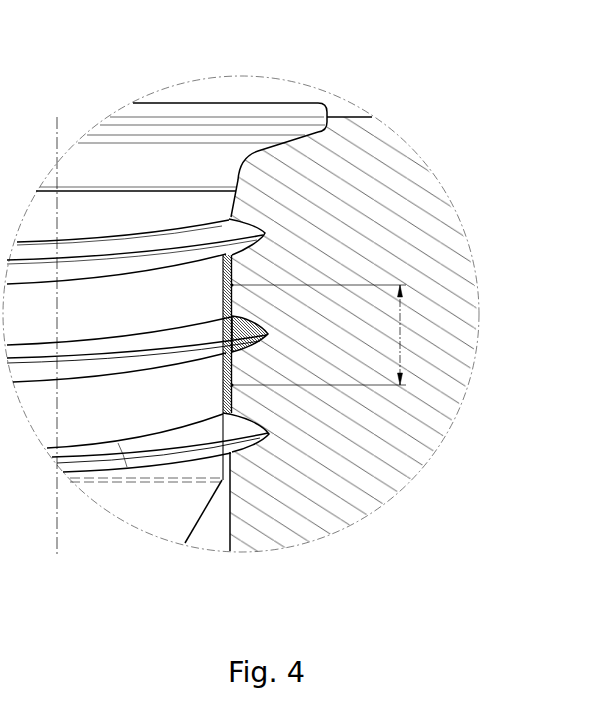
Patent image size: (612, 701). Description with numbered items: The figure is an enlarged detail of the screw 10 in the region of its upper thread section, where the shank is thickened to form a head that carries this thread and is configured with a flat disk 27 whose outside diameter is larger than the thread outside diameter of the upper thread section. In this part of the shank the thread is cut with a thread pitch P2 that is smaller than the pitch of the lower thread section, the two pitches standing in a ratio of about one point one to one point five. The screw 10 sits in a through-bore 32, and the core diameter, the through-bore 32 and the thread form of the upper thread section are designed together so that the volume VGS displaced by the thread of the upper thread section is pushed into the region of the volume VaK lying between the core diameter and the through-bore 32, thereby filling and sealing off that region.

The disk 27 is at (230, 108).
The screw 10 is at (173, 503).
The through-bore 32 is at (228, 518).
The thread pitch of the upper thread section P2 is at (400, 337).
The volume displaced by the thread VGS is at (245, 345).
The volume between core diameter and through-bore VaK is at (232, 398).